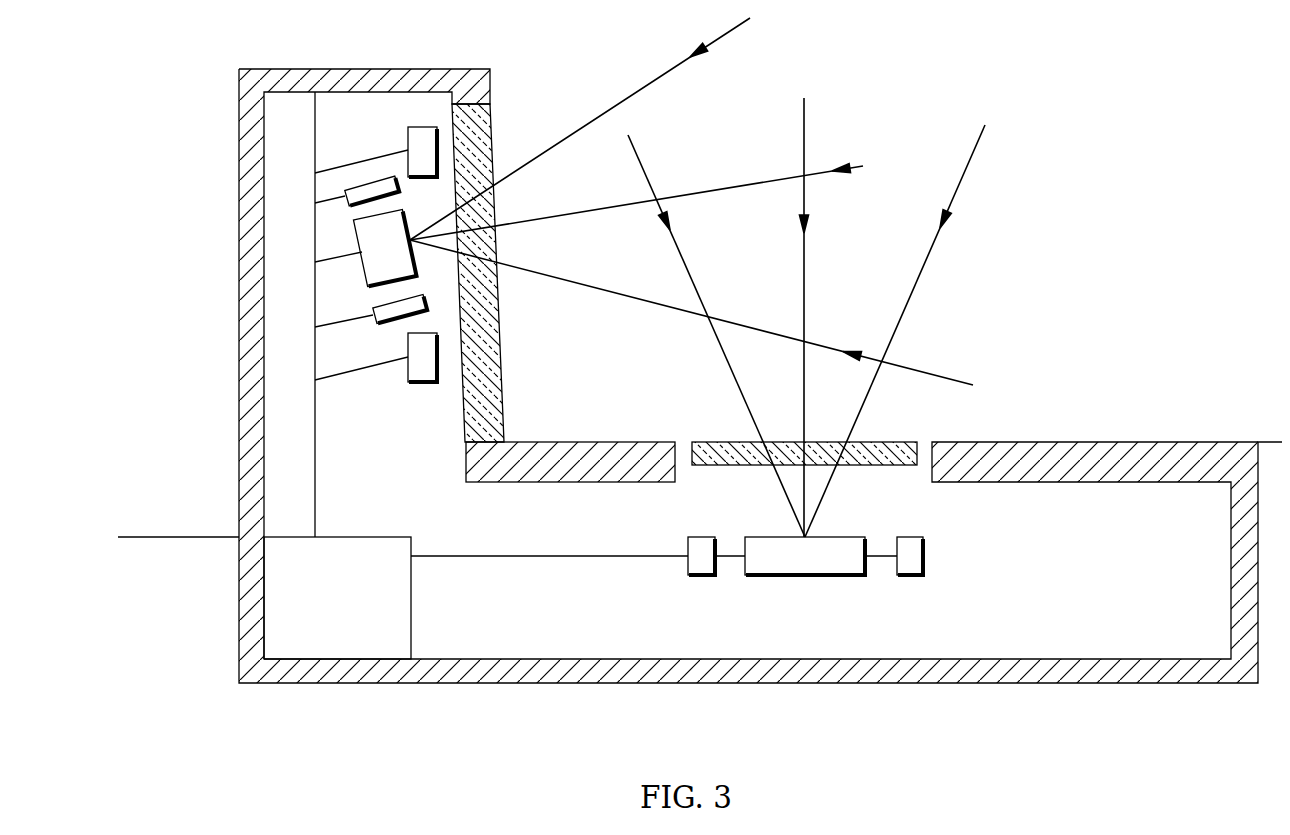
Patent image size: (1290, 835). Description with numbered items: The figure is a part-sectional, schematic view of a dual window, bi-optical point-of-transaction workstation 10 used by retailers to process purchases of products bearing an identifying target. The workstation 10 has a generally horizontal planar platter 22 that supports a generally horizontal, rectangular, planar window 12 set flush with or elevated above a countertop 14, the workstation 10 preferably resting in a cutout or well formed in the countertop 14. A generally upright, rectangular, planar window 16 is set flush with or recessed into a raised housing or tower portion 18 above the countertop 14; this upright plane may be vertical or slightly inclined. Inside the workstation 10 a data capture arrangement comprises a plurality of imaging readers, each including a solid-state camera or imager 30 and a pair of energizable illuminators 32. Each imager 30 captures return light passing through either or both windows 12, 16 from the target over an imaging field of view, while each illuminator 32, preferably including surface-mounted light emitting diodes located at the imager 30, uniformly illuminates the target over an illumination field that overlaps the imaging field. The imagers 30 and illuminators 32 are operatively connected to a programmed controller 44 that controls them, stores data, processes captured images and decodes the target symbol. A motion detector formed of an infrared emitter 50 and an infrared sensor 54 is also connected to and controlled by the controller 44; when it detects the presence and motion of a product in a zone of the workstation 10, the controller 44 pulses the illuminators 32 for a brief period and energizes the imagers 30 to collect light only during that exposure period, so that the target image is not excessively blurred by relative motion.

The point-of-transaction workstation 10 is at (673, 384).
The horizontal window 12 is at (900, 442).
The countertop 14 is at (1272, 442).
The upright window 16 is at (495, 124).
The raised housing 18 is at (490, 78).
The platter 22 is at (1093, 442).
The imager 30 is at (492, 472).
The illuminator 32 is at (943, 705).
The controller 44 is at (282, 602).
The IR emitter 50 is at (422, 130).
The IR sensor 54 is at (437, 357).